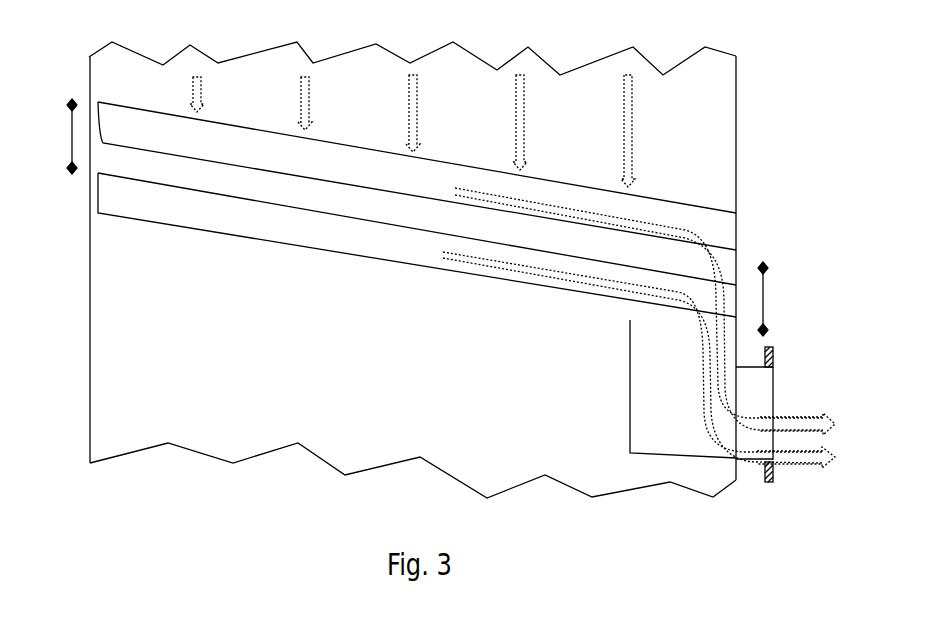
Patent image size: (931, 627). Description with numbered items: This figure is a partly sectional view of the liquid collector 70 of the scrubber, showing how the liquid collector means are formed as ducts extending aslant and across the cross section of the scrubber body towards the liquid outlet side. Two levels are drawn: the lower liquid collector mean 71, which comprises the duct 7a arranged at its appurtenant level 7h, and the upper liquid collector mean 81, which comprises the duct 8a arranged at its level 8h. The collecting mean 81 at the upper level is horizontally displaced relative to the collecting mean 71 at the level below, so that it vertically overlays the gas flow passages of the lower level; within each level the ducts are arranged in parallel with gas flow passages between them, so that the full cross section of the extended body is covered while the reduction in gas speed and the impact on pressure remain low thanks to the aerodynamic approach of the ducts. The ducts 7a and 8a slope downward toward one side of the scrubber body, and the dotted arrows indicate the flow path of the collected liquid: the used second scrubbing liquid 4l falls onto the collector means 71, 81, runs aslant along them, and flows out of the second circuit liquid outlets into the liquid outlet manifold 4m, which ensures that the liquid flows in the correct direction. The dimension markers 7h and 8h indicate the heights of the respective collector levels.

The second scrubbing liquid 4l is at (512, 271).
The liquid outlet manifold 4m is at (700, 423).
The liquid collector 70 is at (763, 203).
The liquid collector mean 71 is at (417, 245).
The duct 7a is at (337, 251).
The level 7h is at (780, 299).
The liquid collector mean 81 is at (417, 176).
The duct 8a is at (303, 177).
The level 8h is at (53, 136).